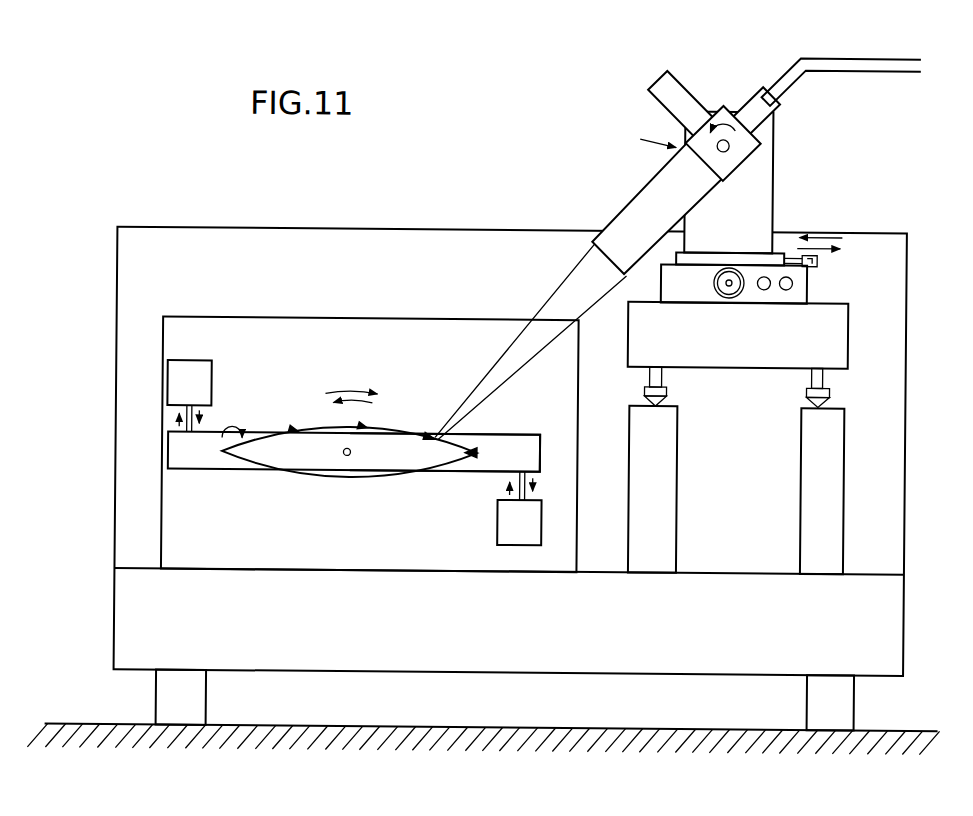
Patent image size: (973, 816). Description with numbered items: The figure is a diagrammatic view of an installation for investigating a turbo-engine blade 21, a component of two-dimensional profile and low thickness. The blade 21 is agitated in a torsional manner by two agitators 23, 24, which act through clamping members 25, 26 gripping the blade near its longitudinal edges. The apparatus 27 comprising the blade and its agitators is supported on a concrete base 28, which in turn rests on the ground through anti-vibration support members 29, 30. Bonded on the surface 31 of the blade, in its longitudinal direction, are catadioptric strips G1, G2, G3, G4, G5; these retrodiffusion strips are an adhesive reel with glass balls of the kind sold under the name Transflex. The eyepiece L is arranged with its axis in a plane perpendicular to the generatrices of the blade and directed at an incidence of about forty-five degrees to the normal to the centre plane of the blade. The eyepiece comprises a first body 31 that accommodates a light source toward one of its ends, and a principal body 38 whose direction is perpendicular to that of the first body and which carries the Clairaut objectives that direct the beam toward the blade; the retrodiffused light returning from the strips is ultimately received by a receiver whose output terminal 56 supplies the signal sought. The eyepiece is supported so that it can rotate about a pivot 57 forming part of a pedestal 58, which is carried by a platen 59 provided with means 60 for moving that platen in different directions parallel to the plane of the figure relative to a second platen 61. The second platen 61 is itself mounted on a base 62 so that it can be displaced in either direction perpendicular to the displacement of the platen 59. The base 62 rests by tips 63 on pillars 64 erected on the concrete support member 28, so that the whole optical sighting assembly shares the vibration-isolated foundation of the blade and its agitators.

The turbo-engine blade 21 is at (300, 460).
The agitator 23 is at (182, 373).
The agitator 24 is at (508, 527).
The clamping member 25 is at (182, 462).
The clamping member 26 is at (468, 468).
The apparatus 27 is at (312, 332).
The concrete base 28 is at (116, 619).
The anti-vibration support member 29 is at (158, 705).
The anti-vibration support member 30 is at (856, 707).
The surface of the blade / first body 31 is at (694, 85).
The principal body 38 is at (641, 200).
The output terminal 56 is at (852, 58).
The pivot 57 is at (735, 152).
The pedestal 58 is at (773, 172).
The platen 59 is at (749, 262).
The means for moving the platen 60 is at (813, 266).
The second platen 61 is at (662, 287).
The base 62 is at (727, 346).
The tips 63 is at (667, 394).
The pillars 64 is at (678, 504).
The catadioptric strip G1 is at (486, 457).
The catadioptric strip G2 is at (518, 341).
The catadioptric strip G3 is at (365, 419).
The catadioptric strip G4 is at (295, 422).
The catadioptric strip G5 is at (221, 447).
The eyepiece L is at (649, 133).